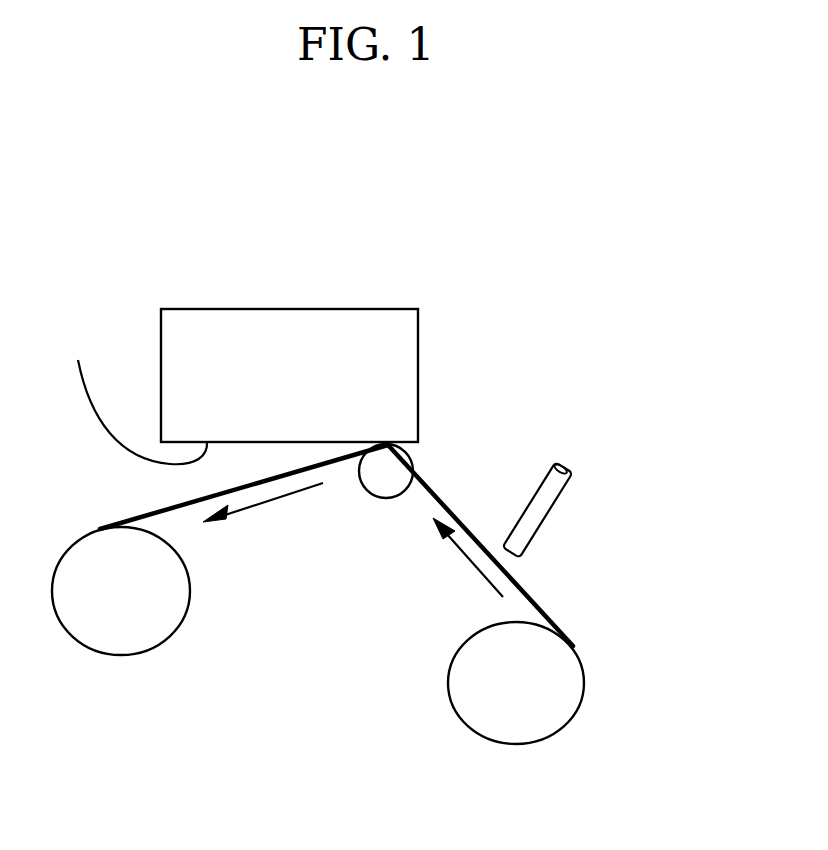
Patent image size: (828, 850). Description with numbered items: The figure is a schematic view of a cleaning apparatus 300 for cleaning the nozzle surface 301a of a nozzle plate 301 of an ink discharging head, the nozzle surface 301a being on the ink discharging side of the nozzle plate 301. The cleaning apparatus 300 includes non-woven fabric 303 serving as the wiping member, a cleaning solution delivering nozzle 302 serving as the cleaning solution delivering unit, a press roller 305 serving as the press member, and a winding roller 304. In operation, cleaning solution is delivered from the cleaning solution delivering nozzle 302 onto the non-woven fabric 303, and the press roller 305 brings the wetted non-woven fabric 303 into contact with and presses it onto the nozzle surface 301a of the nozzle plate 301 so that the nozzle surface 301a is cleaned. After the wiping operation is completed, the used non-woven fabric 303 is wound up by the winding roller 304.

The cleaning apparatus 300 is at (570, 254).
The nozzle plate 301 is at (287, 320).
The nozzle surface 301a is at (78, 360).
The cleaning solution delivering nozzle 302 is at (567, 468).
The non-woven fabric 303 is at (530, 595).
The winding roller 304 is at (112, 642).
The press roller 305 is at (398, 468).